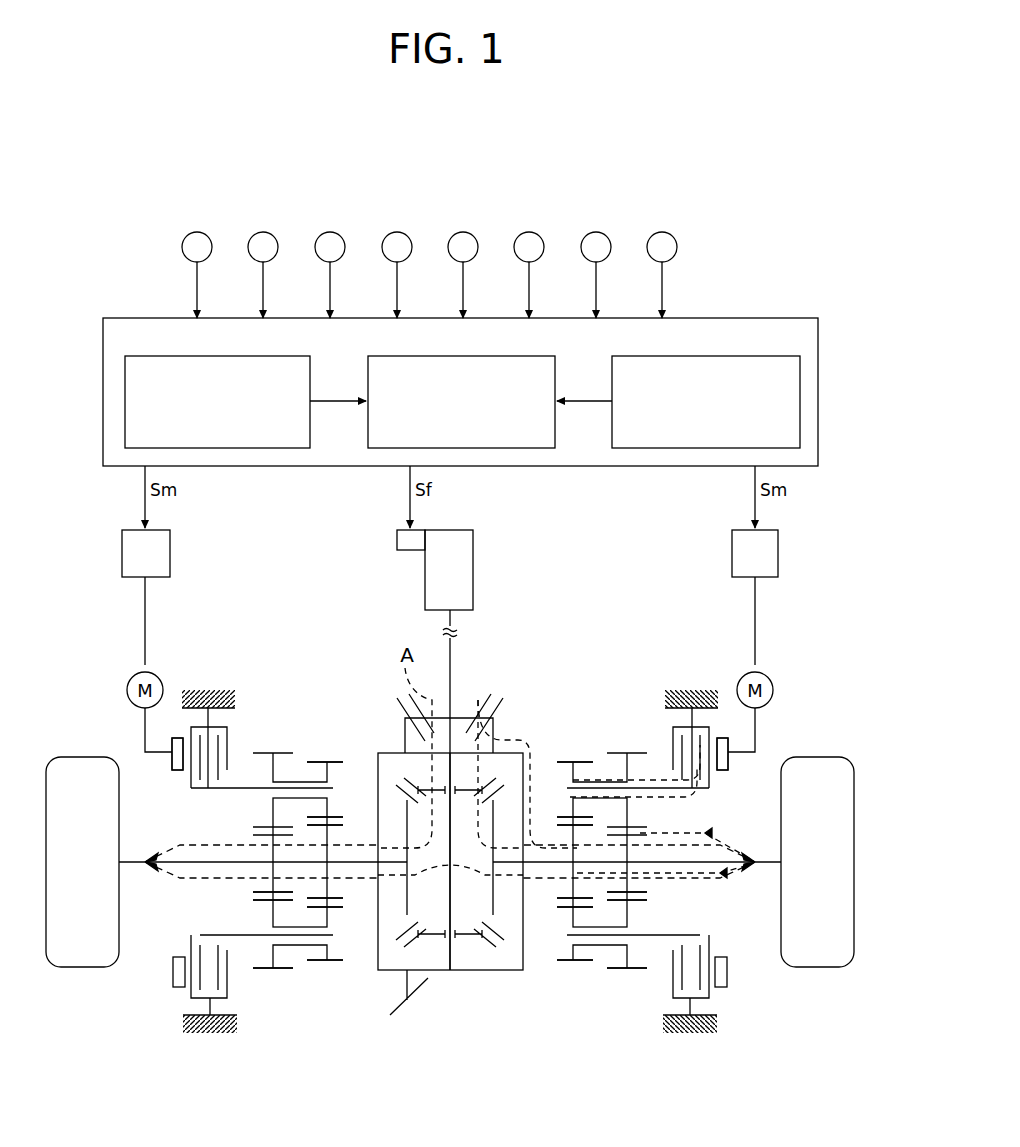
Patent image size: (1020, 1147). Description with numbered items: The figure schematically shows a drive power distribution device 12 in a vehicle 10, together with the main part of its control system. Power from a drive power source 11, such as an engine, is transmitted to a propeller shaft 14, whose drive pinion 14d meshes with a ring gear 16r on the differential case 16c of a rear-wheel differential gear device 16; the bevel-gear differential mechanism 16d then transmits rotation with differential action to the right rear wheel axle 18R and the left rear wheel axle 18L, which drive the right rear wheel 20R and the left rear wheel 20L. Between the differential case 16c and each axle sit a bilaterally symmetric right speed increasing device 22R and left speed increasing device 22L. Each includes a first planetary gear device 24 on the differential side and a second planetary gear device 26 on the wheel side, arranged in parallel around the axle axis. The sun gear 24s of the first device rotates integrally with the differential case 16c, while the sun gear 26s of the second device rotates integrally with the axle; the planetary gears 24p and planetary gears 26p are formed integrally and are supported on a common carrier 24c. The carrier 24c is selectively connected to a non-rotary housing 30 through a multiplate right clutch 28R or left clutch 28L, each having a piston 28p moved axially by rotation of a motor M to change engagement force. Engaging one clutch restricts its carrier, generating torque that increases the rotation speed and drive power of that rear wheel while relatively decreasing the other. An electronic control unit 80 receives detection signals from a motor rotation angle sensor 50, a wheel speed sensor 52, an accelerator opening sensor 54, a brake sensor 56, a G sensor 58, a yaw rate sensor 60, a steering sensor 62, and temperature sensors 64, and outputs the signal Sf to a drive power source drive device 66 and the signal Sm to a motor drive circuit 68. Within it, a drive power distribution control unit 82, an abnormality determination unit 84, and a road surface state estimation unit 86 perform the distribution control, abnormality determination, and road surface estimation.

The vehicle 10 is at (768, 156).
The drive power source 11 is at (458, 540).
The drive power distribution device 12 is at (642, 645).
The propeller shaft 14 is at (452, 682).
The drive pinion 14d is at (497, 706).
The differential gear device 16 is at (463, 1020).
The ring gear 16r is at (396, 716).
The differential case 16c is at (483, 972).
The differential mechanism 16d is at (432, 944).
The left rear wheel axle 18L is at (136, 870).
The right rear wheel axle 18R is at (768, 870).
The left rear wheel 20L is at (83, 968).
The right rear wheel 20R is at (818, 968).
The left speed increasing device 22L is at (292, 682).
The right speed increasing device 22R is at (628, 682).
The first planetary gear device 24 is at (326, 745).
The sun gear 24s is at (338, 905).
The carrier 24c is at (248, 934).
The planetary gears 24p is at (330, 962).
The second planetary gear device 26 is at (276, 745).
The sun gear 26s is at (253, 894).
The planetary gears 26p is at (273, 970).
The left clutch 28L is at (200, 798).
The right clutch 28R is at (704, 798).
The piston 28p is at (177, 771).
The housing 30 is at (207, 690).
The motor rotation angle sensor 50 is at (197, 232).
The wheel speed sensor 52 is at (263, 232).
The accelerator opening sensor 54 is at (330, 232).
The brake sensor 56 is at (397, 232).
The G sensor 58 is at (463, 232).
The yaw rate sensor 60 is at (529, 232).
The steering sensor 62 is at (596, 232).
The temperature sensors 64 is at (662, 232).
The drive power source drive device 66 is at (410, 550).
The motor drive circuit 68 is at (160, 533).
The electronic control unit 80 is at (750, 328).
The drive power distribution control unit 82 is at (545, 362).
The abnormality determination unit 84 is at (158, 362).
The road surface state estimation unit 86 is at (758, 362).